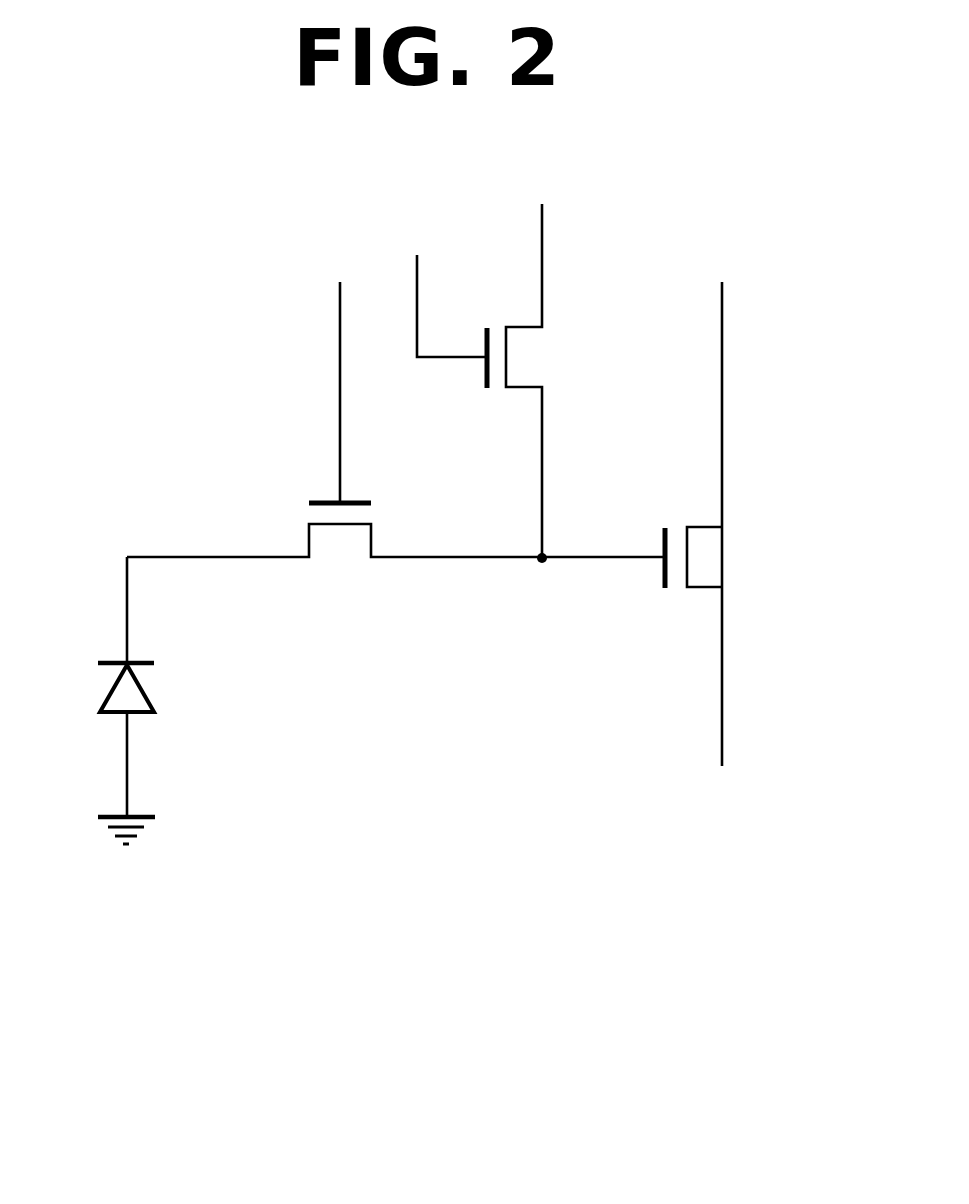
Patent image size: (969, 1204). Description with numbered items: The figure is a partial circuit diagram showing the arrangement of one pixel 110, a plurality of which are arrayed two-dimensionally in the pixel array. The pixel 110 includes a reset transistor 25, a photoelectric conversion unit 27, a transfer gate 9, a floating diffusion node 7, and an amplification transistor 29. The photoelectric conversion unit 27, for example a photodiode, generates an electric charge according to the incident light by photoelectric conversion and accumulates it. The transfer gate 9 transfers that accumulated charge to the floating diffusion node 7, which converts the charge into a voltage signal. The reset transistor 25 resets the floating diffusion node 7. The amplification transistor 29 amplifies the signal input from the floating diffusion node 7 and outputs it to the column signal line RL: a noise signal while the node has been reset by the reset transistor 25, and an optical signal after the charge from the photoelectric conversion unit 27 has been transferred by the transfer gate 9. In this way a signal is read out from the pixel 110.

The pixel 110 is at (57, 925).
The reset transistor 25 is at (498, 318).
The transfer gate 9 is at (302, 512).
The floating diffusion node 7 is at (541, 590).
The amplification transistor 29 is at (677, 518).
The column signal line RL is at (746, 687).
The photoelectric conversion unit 27 is at (158, 690).